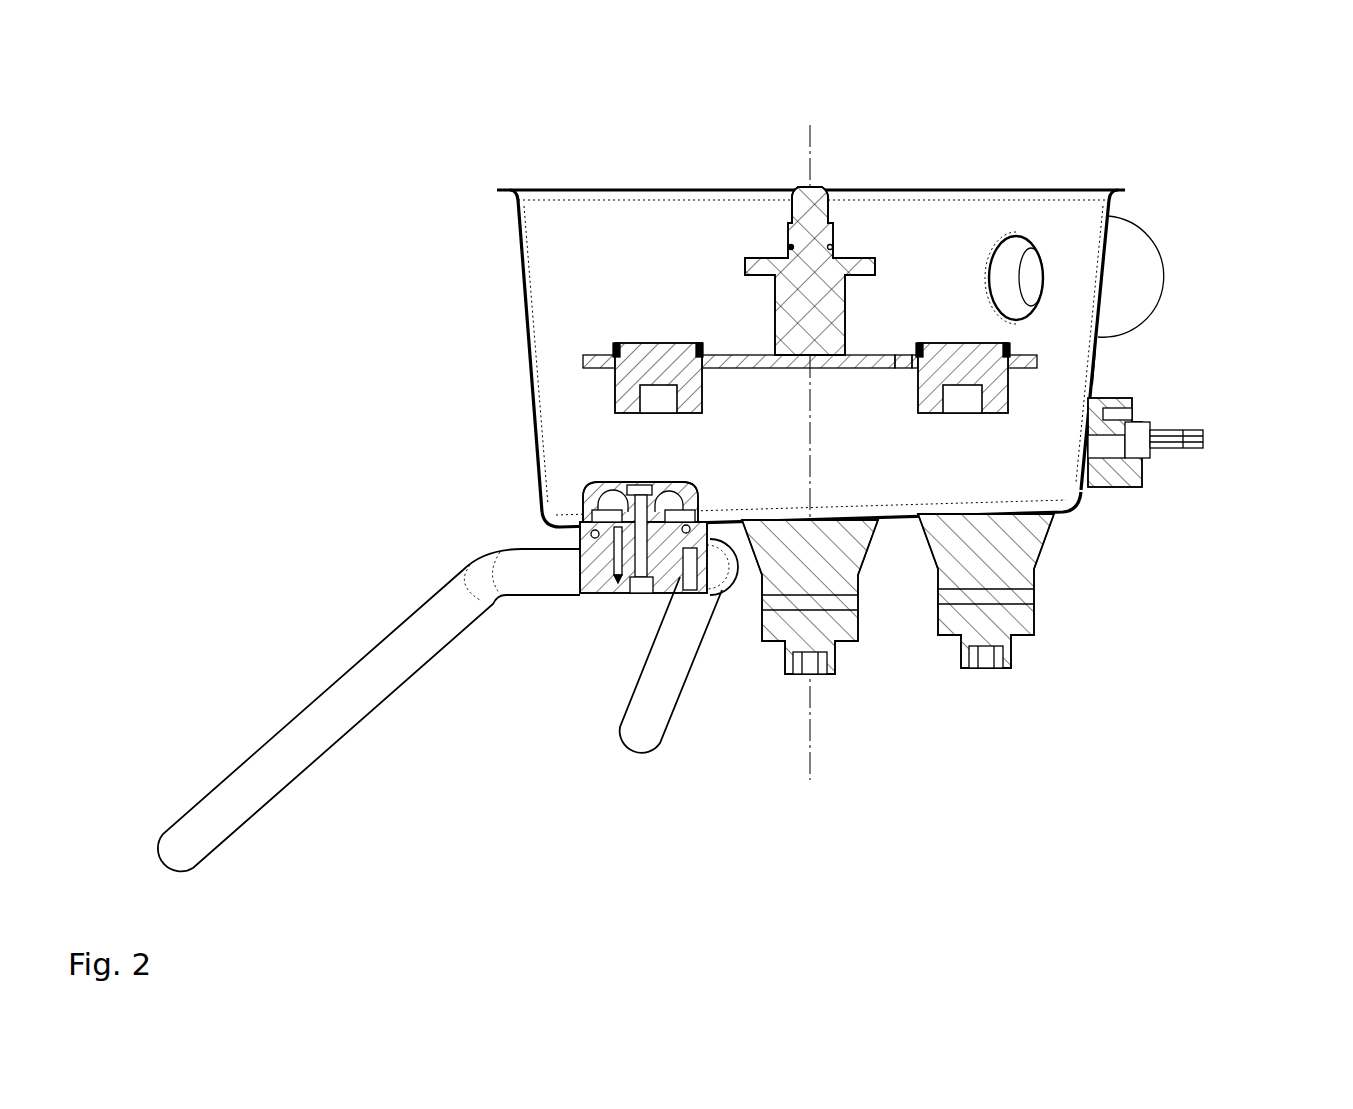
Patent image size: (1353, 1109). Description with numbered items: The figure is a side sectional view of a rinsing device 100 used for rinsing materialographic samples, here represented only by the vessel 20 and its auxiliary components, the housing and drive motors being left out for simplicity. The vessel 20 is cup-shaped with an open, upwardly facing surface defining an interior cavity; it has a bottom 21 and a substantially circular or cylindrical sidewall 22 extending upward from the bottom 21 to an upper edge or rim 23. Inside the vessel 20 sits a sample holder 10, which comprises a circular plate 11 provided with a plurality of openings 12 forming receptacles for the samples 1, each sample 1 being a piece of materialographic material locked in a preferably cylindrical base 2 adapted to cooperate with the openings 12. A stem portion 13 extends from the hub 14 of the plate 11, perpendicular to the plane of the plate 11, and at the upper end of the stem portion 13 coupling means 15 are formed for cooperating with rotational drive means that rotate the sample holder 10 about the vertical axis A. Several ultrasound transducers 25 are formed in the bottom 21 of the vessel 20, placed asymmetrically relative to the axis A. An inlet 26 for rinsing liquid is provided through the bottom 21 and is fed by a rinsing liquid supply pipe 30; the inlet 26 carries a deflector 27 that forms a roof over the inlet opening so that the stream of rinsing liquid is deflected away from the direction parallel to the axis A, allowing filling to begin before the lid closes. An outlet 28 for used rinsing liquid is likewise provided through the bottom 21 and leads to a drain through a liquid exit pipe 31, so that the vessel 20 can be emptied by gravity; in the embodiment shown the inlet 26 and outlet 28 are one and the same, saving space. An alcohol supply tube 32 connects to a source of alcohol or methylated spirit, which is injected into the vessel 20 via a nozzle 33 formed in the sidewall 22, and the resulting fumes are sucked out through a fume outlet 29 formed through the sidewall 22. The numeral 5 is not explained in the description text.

The rinsing device 100 is at (427, 167).
The sample 1 is at (653, 413).
The base 2 is at (650, 343).
The partition plate 5 is at (903, 368).
The sample holder 10 is at (1030, 368).
The circular plate 11 is at (713, 362).
The openings 12 is at (693, 355).
The stem portion 13 is at (837, 290).
The hub 14 is at (865, 257).
The coupling means 15 is at (822, 208).
The vessel 20 is at (527, 345).
The bottom 21 is at (893, 518).
The sidewall 22 is at (1092, 365).
The rim 23 is at (1118, 190).
The ultrasound transducer 25 is at (780, 660).
The inlet 26 is at (607, 587).
The deflector 27 is at (595, 525).
The outlet 28 is at (640, 539).
The fume outlet 29 is at (1033, 278).
The rinsing liquid supply pipe 30 is at (645, 703).
The liquid exit pipe 31 is at (435, 608).
The alcohol supply tube 32 is at (1185, 447).
The nozzle 33 is at (1105, 478).
The axis A is at (810, 135).